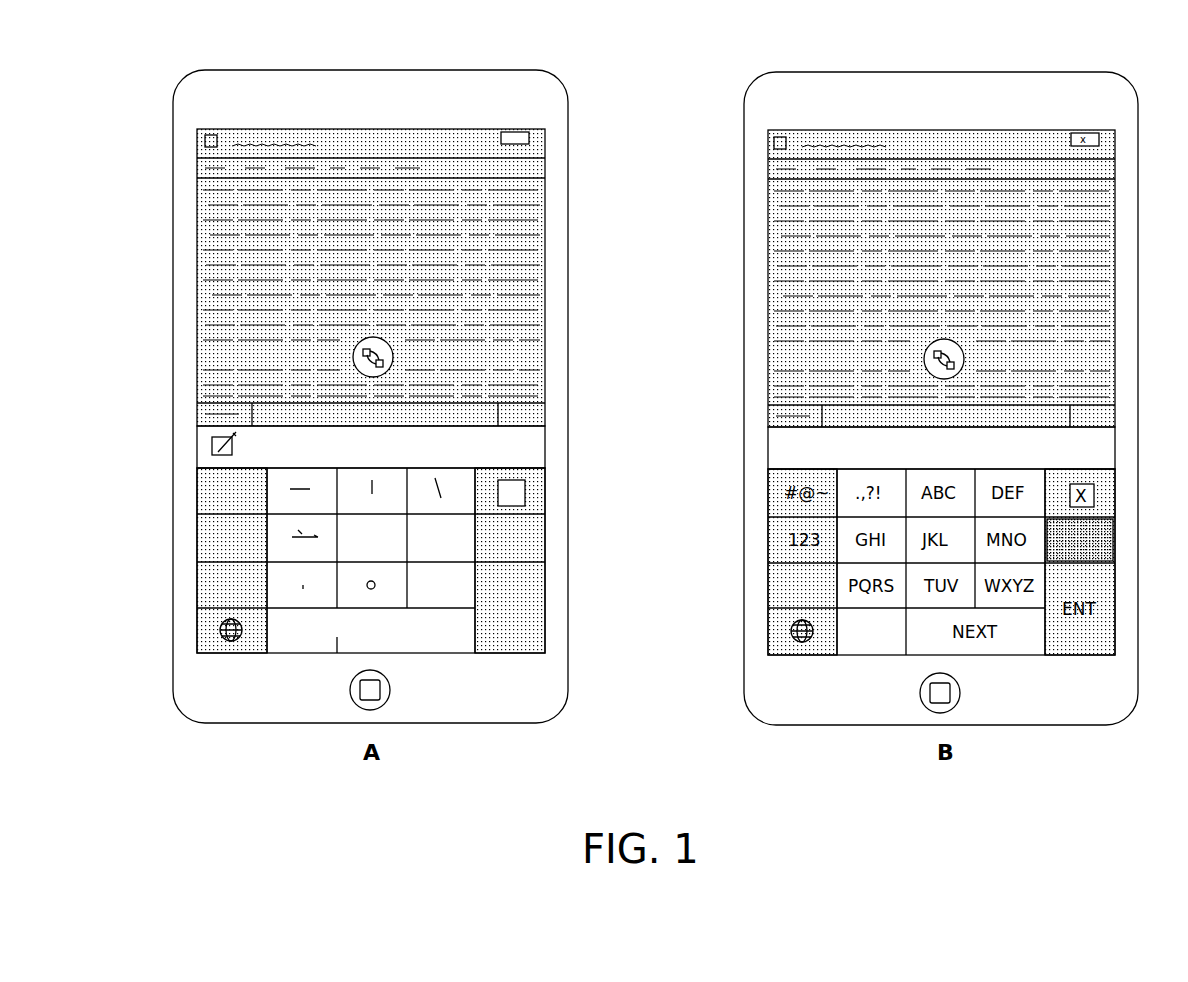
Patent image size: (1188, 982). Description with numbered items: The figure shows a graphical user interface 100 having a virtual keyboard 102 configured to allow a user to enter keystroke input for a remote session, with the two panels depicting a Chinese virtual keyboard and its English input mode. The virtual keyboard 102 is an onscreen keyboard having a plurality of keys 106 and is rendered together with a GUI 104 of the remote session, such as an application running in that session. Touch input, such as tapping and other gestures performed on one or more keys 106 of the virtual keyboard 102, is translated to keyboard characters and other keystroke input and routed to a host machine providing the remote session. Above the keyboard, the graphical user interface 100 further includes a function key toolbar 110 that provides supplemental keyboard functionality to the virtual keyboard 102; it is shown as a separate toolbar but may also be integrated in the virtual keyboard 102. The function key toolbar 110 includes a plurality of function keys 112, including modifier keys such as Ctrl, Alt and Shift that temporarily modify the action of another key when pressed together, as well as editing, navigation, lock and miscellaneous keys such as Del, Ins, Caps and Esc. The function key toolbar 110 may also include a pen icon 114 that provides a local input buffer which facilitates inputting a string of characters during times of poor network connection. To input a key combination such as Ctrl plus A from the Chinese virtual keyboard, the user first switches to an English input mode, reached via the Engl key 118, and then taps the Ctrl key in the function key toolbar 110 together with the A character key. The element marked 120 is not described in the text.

The graphical user interface 100 is at (196, 108).
The virtual keyboard 102 is at (333, 591).
The GUI of the remote session 104 is at (208, 251).
The keys 106 is at (343, 598).
The function key toolbar 110 is at (545, 445).
The function keys 112 is at (298, 437).
The pen icon 114 is at (210, 448).
The Engl key 118 is at (778, 634).
The language indicator key 120 is at (1105, 552).